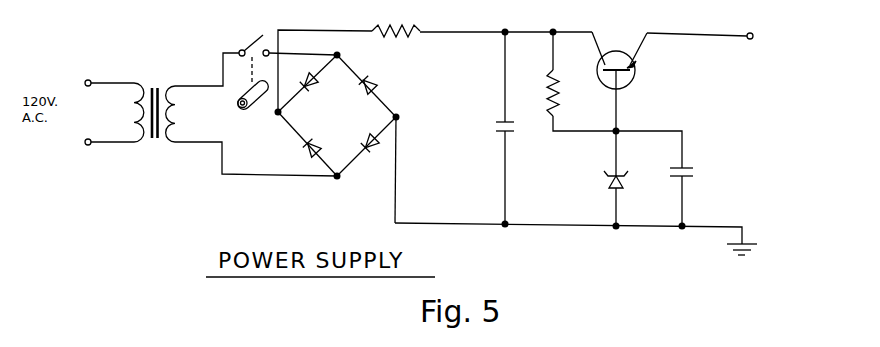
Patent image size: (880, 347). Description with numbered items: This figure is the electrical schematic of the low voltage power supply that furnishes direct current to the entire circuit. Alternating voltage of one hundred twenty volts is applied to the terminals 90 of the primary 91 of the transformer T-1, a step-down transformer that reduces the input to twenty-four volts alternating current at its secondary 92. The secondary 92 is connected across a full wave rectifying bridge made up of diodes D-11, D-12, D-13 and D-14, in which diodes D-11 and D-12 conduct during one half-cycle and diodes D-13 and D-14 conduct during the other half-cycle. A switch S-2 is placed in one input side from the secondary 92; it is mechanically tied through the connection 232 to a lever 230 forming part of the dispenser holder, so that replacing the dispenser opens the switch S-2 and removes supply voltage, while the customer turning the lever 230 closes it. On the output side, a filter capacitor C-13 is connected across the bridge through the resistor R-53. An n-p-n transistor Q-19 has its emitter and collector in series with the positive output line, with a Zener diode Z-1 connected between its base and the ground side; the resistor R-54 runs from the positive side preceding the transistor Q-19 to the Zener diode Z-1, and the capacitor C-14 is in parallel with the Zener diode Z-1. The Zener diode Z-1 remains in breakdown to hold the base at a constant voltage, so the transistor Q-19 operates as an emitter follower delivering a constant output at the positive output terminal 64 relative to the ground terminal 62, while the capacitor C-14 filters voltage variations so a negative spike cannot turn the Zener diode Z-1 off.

The terminals 90 is at (92, 87).
The primary 91 is at (137, 114).
The secondary 92 is at (167, 112).
The transformer T-1 is at (155, 124).
The switch S-2 is at (281, 41).
The connection 232 is at (249, 67).
The lever 230 is at (255, 108).
The diode D-11 is at (312, 83).
The diode D-12 is at (366, 146).
The diode D-13 is at (374, 86).
The diode D-14 is at (304, 144).
The resistor R-53 is at (402, 42).
The resistor R-54 is at (581, 81).
The filter capacitor C-13 is at (484, 128).
The capacitor C-14 is at (676, 178).
The n-p-n transistor Q-19 is at (634, 81).
The Zener diode Z-1 is at (628, 178).
The positive supply output terminal (+V) 64 is at (751, 33).
The ground terminal 62 is at (746, 243).